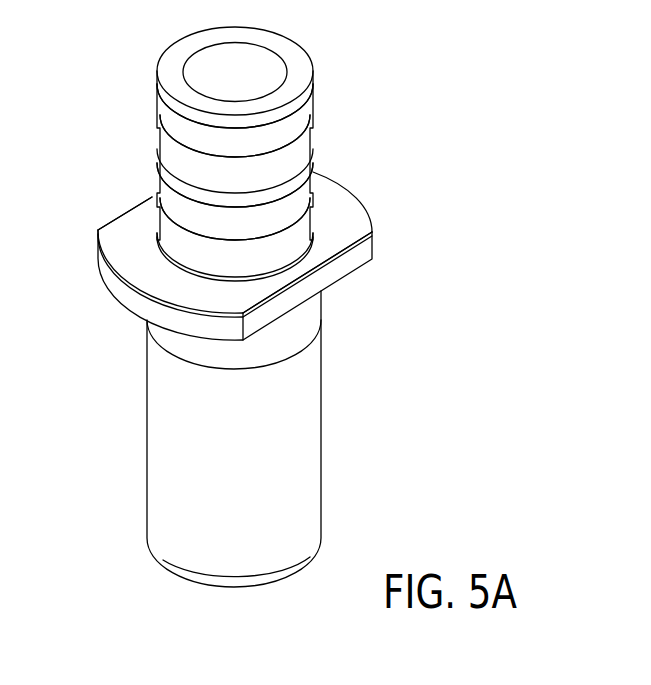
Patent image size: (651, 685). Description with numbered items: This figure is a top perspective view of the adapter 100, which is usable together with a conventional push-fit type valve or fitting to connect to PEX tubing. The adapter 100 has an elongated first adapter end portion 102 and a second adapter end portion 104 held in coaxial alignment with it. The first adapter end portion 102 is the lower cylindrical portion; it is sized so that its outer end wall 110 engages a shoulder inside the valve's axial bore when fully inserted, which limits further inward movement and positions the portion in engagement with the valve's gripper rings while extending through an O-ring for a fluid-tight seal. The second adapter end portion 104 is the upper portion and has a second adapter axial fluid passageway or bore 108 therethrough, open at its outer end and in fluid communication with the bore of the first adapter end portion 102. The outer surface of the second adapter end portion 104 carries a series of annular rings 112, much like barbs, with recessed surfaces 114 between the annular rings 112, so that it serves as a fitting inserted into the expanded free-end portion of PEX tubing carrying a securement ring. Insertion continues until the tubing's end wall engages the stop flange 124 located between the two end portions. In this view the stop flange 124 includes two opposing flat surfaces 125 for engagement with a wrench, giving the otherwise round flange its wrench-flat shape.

The adapter 100 is at (520, 116).
The first adapter end portion 102 is at (323, 440).
The second adapter end portion 104 is at (315, 135).
The second adapter axial bore 108 is at (247, 62).
The outer end wall 110 is at (182, 578).
The annular rings 112 is at (158, 84).
The recessed surfaces 114 is at (160, 118).
The stop flange 124 is at (347, 210).
The flat surfaces 125 is at (120, 215).